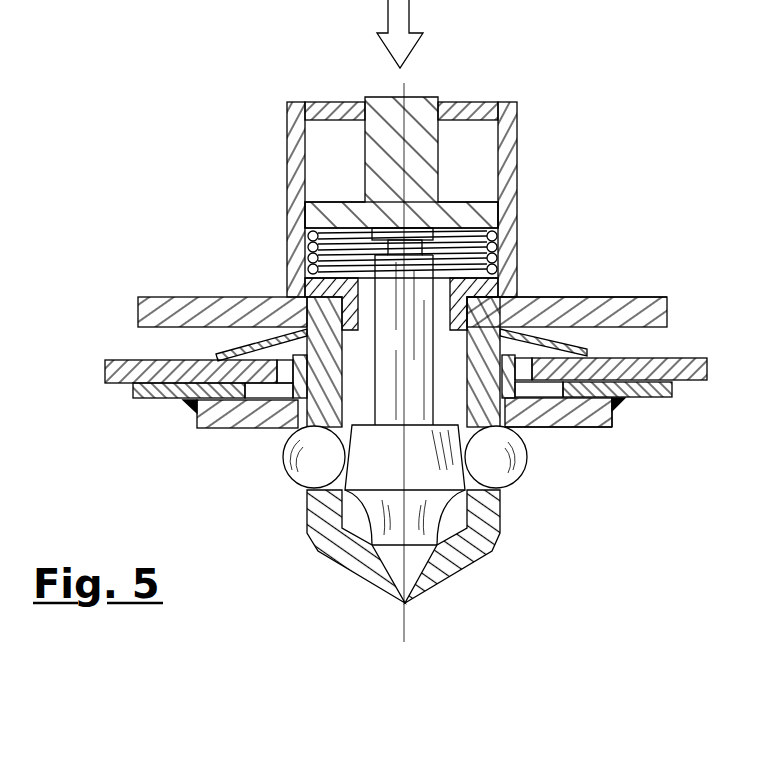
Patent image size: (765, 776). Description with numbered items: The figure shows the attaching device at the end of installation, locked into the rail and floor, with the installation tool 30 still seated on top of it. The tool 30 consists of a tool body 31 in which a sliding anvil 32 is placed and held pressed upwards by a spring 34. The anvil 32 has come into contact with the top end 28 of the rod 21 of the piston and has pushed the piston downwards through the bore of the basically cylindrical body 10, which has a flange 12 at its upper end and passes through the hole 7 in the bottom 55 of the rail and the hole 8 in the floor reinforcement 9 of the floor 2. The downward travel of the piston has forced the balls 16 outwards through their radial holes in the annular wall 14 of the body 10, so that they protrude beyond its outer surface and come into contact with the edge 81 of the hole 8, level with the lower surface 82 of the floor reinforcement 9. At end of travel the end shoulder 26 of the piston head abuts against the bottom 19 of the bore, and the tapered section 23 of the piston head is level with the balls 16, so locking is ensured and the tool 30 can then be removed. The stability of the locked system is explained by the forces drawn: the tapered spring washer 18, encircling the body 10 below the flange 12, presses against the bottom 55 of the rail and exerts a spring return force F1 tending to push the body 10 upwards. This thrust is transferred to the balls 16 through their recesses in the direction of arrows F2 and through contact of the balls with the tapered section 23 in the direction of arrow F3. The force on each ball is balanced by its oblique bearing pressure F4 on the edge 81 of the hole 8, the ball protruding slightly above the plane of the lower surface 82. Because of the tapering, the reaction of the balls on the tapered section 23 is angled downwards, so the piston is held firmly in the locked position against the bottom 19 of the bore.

The installation tool 30 is at (257, 127).
The tool body 31 is at (517, 103).
The sliding anvil 32 is at (470, 205).
The spring 34 is at (397, 230).
The top end of the piston rod 28 is at (345, 228).
The rod 21 is at (385, 268).
The flange 12 is at (195, 297).
The body 10 is at (218, 357).
The hole 7 is at (520, 342).
The bottom of rail 55 is at (105, 371).
The floor 2 is at (150, 399).
The floor reinforcement 9 is at (212, 428).
The edge of the hole 81 is at (520, 441).
The hole 8 is at (610, 425).
The lower surface of the floor reinforcement 82 is at (605, 432).
The tapered spring washer 18 is at (590, 335).
The balls 16 is at (523, 465).
The annular wall 14 is at (423, 450).
The bottom of the bore 19 is at (358, 525).
The tapered section 23 is at (468, 512).
The end shoulder 26 is at (445, 538).
The applied force F is at (394, 34).
The spring return force F1 is at (393, 622).
The thrust force direction F2 is at (315, 465).
The contact force direction F3 is at (322, 453).
The bearing pressure F4 is at (310, 448).